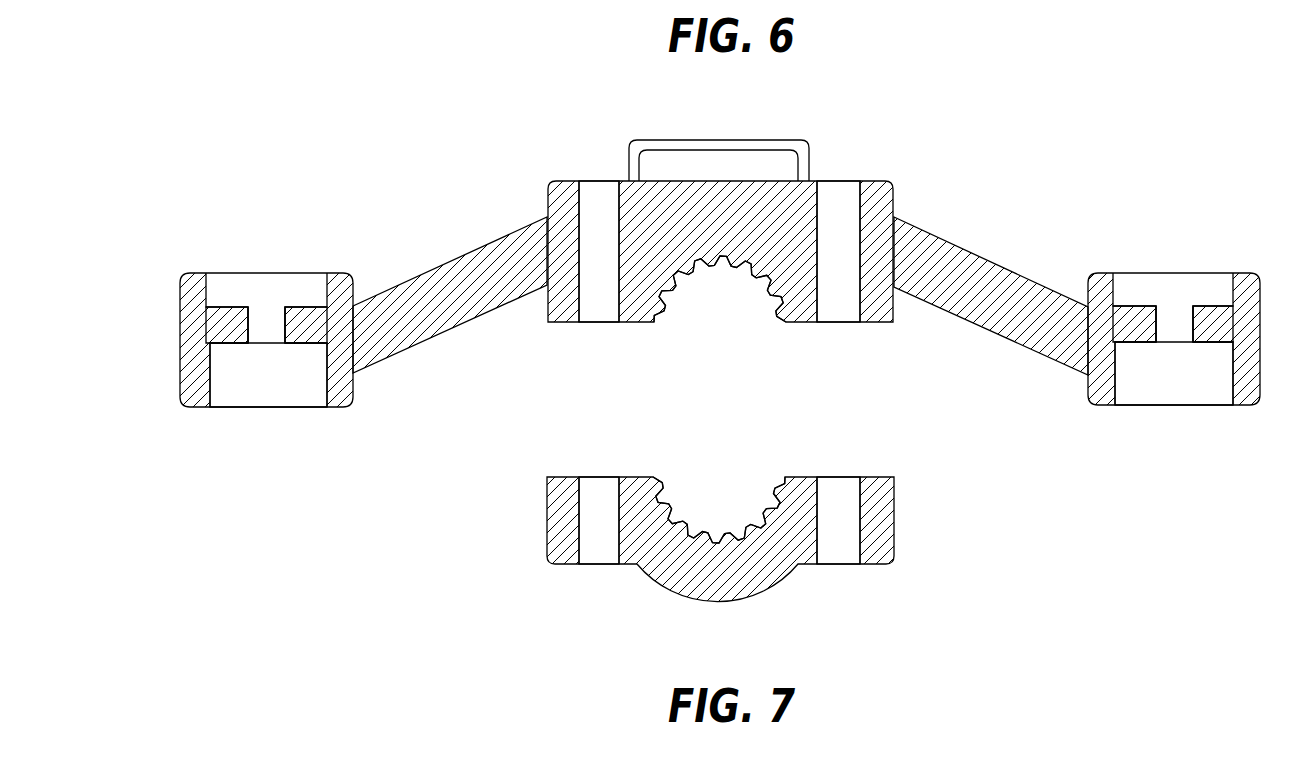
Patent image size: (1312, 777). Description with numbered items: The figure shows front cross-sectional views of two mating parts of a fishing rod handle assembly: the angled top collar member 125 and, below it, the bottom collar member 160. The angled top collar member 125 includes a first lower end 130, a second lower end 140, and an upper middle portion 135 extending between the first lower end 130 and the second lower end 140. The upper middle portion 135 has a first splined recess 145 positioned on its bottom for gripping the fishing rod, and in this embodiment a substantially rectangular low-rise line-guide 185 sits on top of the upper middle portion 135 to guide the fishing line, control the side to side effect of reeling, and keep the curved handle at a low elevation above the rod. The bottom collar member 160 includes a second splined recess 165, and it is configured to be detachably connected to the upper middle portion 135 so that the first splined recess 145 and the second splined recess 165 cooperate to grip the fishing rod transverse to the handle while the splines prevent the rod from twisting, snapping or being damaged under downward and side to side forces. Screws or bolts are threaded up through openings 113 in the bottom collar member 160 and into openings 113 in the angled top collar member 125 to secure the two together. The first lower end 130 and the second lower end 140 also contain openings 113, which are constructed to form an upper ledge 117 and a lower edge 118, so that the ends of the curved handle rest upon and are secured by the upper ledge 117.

In FIG. 6, the opening 113 is at (600, 316).
In FIG. 7, the opening 113 is at (600, 558).
In FIG. 6, the upper ledge 117 is at (305, 307).
In FIG. 6, the lower edge 118 is at (227, 343).
In FIG. 6, the angled top collar member 125 is at (715, 212).
In FIG. 6, the first lower end 130 is at (192, 330).
In FIG. 6, the upper middle portion 135 is at (797, 200).
In FIG. 6, the second lower end 140 is at (1245, 397).
In FIG. 6, the first splined recess 145 is at (758, 272).
In FIG. 7, the bottom collar member 160 is at (728, 505).
In FIG. 7, the second splined recess 165 is at (673, 525).
In FIG. 6, the low-rise line-guide 185 is at (728, 140).